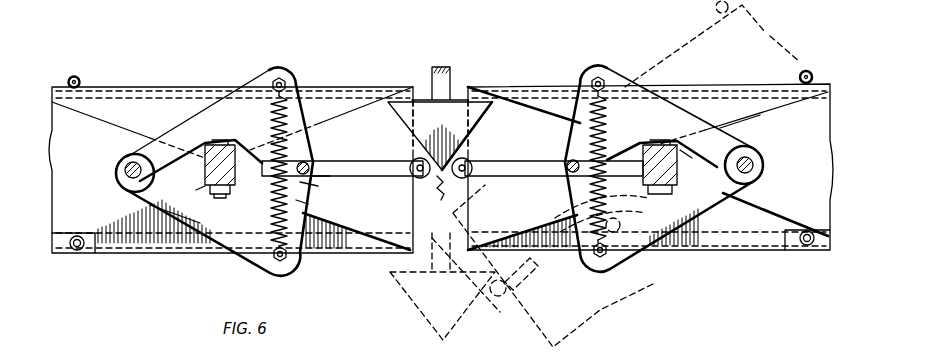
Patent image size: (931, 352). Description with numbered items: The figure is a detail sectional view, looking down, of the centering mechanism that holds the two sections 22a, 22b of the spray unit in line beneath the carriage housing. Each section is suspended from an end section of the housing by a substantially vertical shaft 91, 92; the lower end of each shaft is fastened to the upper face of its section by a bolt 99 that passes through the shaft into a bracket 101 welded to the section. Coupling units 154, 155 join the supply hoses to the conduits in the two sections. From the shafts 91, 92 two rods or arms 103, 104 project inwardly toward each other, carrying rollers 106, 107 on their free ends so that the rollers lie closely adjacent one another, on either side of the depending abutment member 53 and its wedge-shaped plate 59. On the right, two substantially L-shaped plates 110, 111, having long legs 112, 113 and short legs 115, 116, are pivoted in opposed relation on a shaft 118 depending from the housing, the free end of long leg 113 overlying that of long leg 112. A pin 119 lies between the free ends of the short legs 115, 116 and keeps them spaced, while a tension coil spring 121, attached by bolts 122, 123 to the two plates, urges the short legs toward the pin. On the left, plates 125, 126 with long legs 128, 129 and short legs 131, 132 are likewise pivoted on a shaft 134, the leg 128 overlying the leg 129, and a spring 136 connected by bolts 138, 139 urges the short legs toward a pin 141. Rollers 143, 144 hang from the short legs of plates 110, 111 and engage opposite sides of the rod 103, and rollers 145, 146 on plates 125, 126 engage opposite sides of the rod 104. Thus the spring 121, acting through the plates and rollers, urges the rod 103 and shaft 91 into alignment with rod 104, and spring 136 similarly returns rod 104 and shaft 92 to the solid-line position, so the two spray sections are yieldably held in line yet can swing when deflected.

The section of spray unit 22a is at (580, 312).
The section of spray unit 22b is at (365, 258).
The abutment member 53 is at (455, 79).
The wedge-shaped plate 59 is at (432, 196).
The shaft 91 is at (688, 150).
The shaft 92 is at (226, 198).
The bolt 99 is at (216, 196).
The bracket 101 is at (205, 192).
The rod or arm 103 is at (520, 160).
The rod or arm 104 is at (352, 158).
The roller 106 is at (470, 160).
The roller 107 is at (413, 179).
The L-shaped plate 110 is at (626, 80).
The L-shaped plate 111 is at (622, 258).
The long leg 112 is at (722, 127).
The long leg 113 is at (708, 240).
The short leg 115 is at (580, 110).
The short leg 116 is at (577, 201).
The shaft 118 is at (752, 158).
The pin 119 is at (566, 172).
The tension coil spring 121 is at (608, 128).
The bolt 122 is at (603, 76).
The bolt 123 is at (594, 254).
The L-shaped plate 125 is at (242, 100).
The L-shaped plate 126 is at (256, 258).
The long leg 128 is at (178, 133).
The long leg 129 is at (262, 230).
The short leg 131 is at (300, 105).
The short leg 132 is at (320, 187).
The shaft 134 is at (127, 163).
The spring 136 is at (300, 118).
The bolt 138 is at (284, 76).
The bolt 139 is at (292, 262).
The pin 141 is at (322, 172).
The roller 143 is at (644, 143).
The roller 144 is at (628, 203).
The roller 145 is at (312, 160).
The roller 146 is at (308, 205).
The coupling unit 154 is at (86, 255).
The coupling unit 155 is at (806, 68).